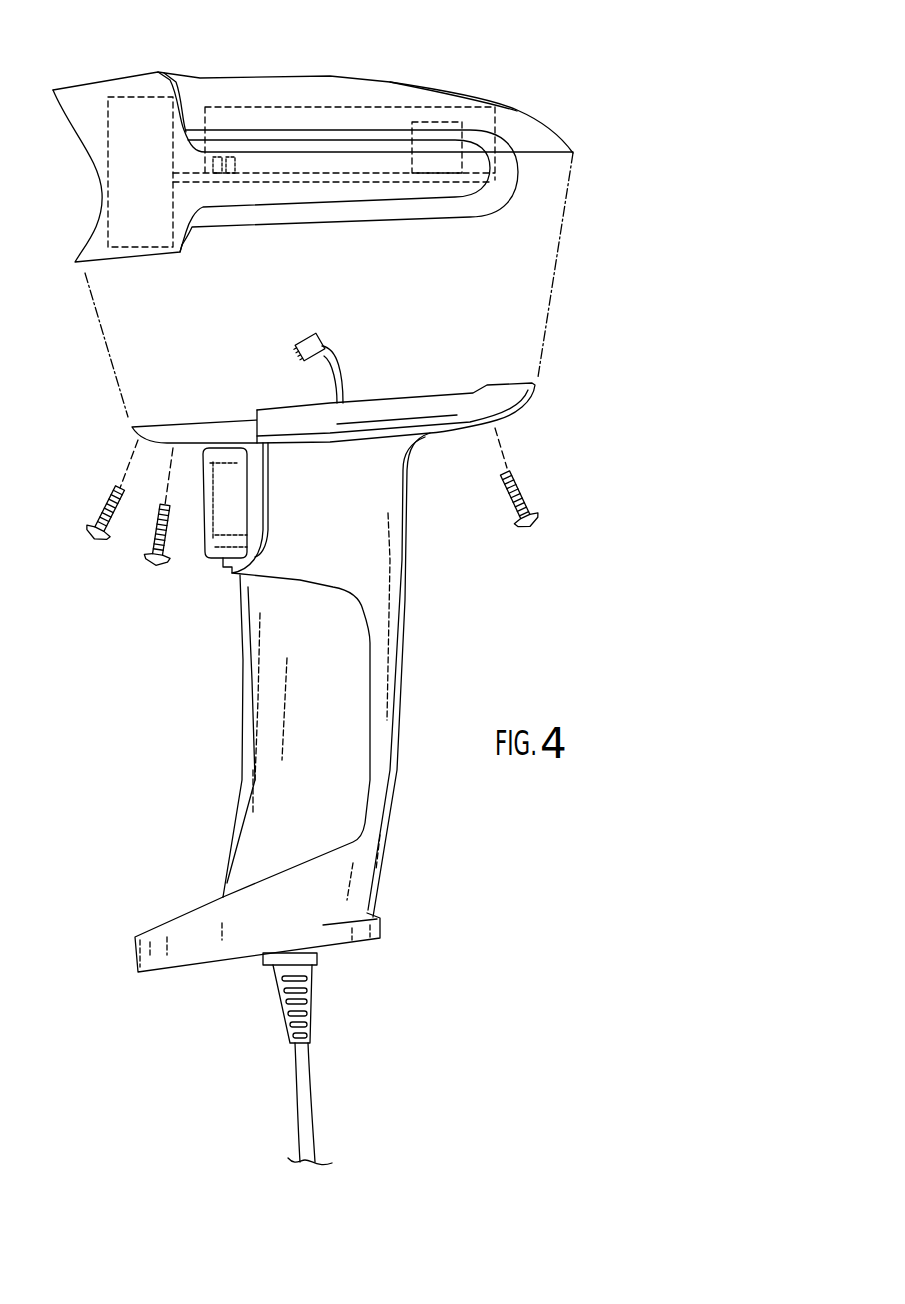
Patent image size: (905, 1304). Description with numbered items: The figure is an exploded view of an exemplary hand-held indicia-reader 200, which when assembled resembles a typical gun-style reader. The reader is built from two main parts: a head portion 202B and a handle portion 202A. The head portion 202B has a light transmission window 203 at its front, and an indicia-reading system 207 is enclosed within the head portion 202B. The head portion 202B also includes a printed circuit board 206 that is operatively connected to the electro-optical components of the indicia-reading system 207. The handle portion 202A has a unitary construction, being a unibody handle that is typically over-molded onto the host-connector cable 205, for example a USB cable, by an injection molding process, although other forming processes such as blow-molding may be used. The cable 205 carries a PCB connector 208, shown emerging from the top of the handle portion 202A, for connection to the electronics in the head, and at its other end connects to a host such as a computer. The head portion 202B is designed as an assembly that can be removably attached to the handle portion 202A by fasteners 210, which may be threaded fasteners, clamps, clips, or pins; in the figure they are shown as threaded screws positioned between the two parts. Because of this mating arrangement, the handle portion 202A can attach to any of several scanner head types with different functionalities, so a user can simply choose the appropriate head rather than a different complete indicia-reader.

The hand-held indicia-reader 200 is at (610, 180).
The handle portion 202A is at (408, 568).
The head portion 202B is at (252, 78).
The light transmission window 203 is at (130, 202).
The host-connector cable 205 is at (300, 1098).
The printed circuit board 206 is at (397, 177).
The indicia-reading system 207 is at (243, 122).
The PCB connector 208 is at (318, 335).
The fasteners 210 is at (157, 570).